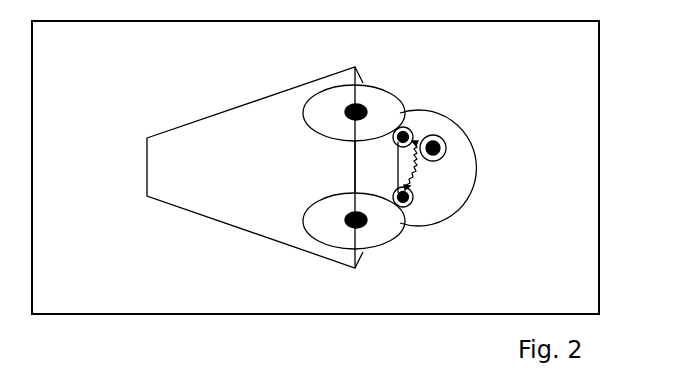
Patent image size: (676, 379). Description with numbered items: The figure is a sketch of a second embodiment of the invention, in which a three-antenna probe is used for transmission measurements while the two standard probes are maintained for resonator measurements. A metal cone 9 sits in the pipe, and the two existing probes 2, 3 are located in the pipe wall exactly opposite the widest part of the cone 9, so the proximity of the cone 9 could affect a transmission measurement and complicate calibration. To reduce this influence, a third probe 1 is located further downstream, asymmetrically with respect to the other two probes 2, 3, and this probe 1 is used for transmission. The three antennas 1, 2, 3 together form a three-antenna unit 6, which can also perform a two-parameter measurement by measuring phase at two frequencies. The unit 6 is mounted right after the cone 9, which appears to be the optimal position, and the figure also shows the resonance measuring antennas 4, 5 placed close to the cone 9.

The third probe 1 is at (441, 143).
The probe 2 is at (406, 128).
The probe 3 is at (408, 206).
The resonance measuring antenna 4 is at (362, 104).
The resonance measuring antenna 5 is at (358, 228).
The 3-antenna unit 6 is at (448, 168).
The cone 9 is at (255, 167).